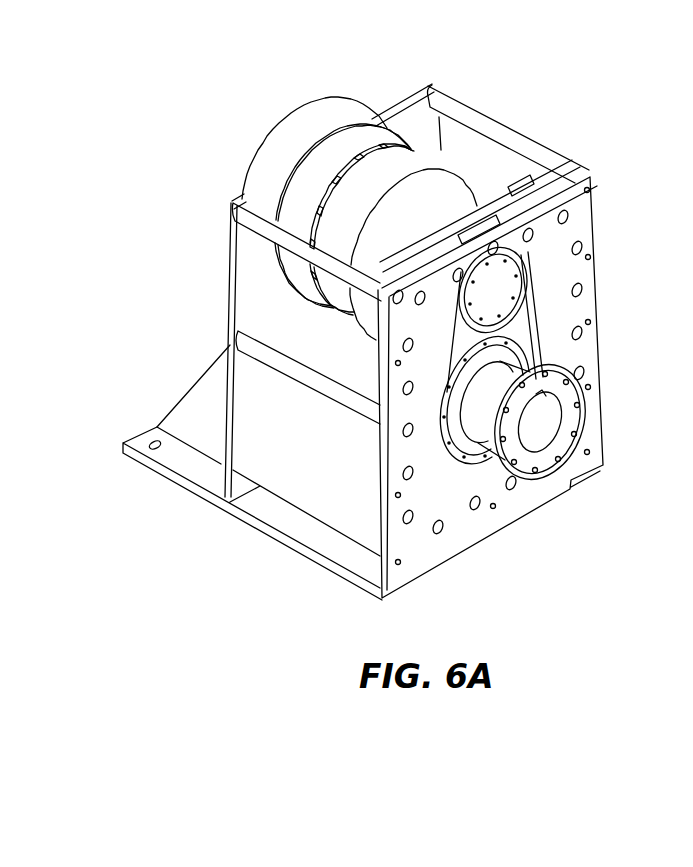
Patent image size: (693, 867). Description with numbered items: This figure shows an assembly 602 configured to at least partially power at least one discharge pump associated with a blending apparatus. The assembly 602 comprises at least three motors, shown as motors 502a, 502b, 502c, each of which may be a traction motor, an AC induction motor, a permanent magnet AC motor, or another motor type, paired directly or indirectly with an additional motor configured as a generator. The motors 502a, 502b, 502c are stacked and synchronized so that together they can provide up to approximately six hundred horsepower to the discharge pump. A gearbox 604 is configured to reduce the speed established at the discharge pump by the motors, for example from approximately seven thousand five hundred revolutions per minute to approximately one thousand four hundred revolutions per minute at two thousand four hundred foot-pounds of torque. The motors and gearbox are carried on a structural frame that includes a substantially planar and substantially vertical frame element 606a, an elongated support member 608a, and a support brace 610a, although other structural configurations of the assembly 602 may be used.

The assembly 602 is at (520, 541).
The motor 502a is at (305, 125).
The motor 502b is at (297, 262).
The motor 502c is at (423, 163).
The gearbox 604 is at (513, 197).
The frame element 606a is at (587, 302).
The elongated support member 608a is at (286, 377).
The support brace 610a is at (190, 390).